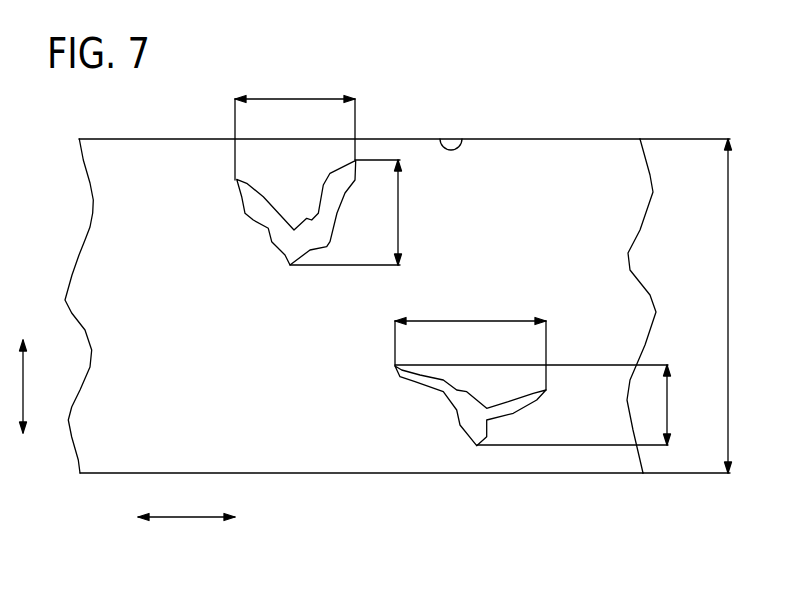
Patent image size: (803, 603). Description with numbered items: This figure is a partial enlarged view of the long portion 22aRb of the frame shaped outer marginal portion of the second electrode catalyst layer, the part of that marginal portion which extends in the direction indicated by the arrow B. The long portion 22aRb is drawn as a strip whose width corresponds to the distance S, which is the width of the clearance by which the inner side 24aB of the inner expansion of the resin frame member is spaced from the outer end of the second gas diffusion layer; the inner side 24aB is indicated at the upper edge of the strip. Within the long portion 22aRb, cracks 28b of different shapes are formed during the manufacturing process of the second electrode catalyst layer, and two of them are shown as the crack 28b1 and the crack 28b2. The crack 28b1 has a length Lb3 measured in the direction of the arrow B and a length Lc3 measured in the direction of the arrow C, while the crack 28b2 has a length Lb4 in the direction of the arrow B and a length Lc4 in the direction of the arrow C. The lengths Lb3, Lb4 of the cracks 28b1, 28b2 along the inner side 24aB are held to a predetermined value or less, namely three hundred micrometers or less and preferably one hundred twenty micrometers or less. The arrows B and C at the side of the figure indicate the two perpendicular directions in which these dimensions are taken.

The long portion 22aRb is at (562, 150).
The inner side 24aB is at (460, 139).
The cracks 28b is at (391, 366).
The crack 28b1 is at (310, 240).
The crack 28b2 is at (455, 417).
The length Lb3 is at (295, 125).
The length Lc3 is at (365, 212).
The length Lb4 is at (470, 340).
The length Lc4 is at (552, 405).
The distance S is at (693, 306).
The arrow C is at (31, 386).
The arrow B is at (186, 503).